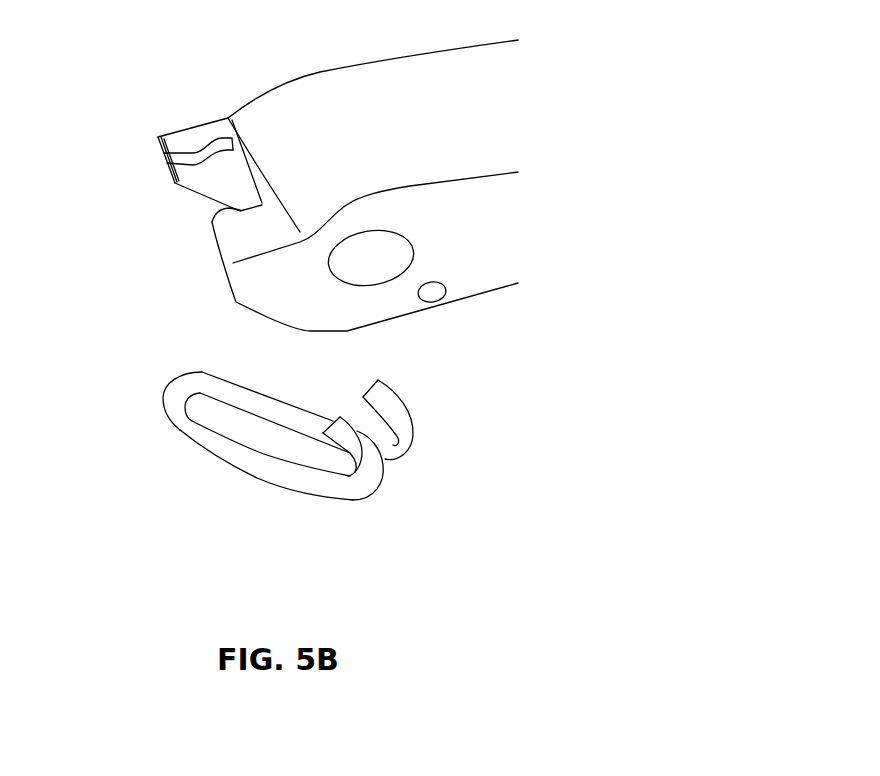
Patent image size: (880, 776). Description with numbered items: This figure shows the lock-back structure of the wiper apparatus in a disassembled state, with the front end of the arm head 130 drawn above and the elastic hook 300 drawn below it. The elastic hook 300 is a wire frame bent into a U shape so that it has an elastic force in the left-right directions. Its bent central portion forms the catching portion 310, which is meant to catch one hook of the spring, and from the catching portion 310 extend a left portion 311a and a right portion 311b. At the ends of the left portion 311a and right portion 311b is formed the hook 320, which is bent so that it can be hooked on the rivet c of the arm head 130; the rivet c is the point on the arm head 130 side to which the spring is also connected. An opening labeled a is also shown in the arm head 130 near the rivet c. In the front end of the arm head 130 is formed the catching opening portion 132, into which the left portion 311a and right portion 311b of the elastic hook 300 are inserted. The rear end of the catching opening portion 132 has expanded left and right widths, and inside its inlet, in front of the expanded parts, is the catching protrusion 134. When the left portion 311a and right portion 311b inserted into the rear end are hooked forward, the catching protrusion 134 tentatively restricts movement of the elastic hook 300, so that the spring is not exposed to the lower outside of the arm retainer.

The arm head 130 is at (323, 90).
The catching opening portion 132 is at (233, 171).
The catching protrusion 134 is at (197, 157).
The large opening a is at (372, 270).
The rivet c is at (433, 297).
The elastic hook 300 is at (209, 460).
The catching portion 310 is at (190, 383).
The left portion 311a is at (268, 468).
The right portion 311b is at (273, 413).
The hook 320 is at (352, 442).